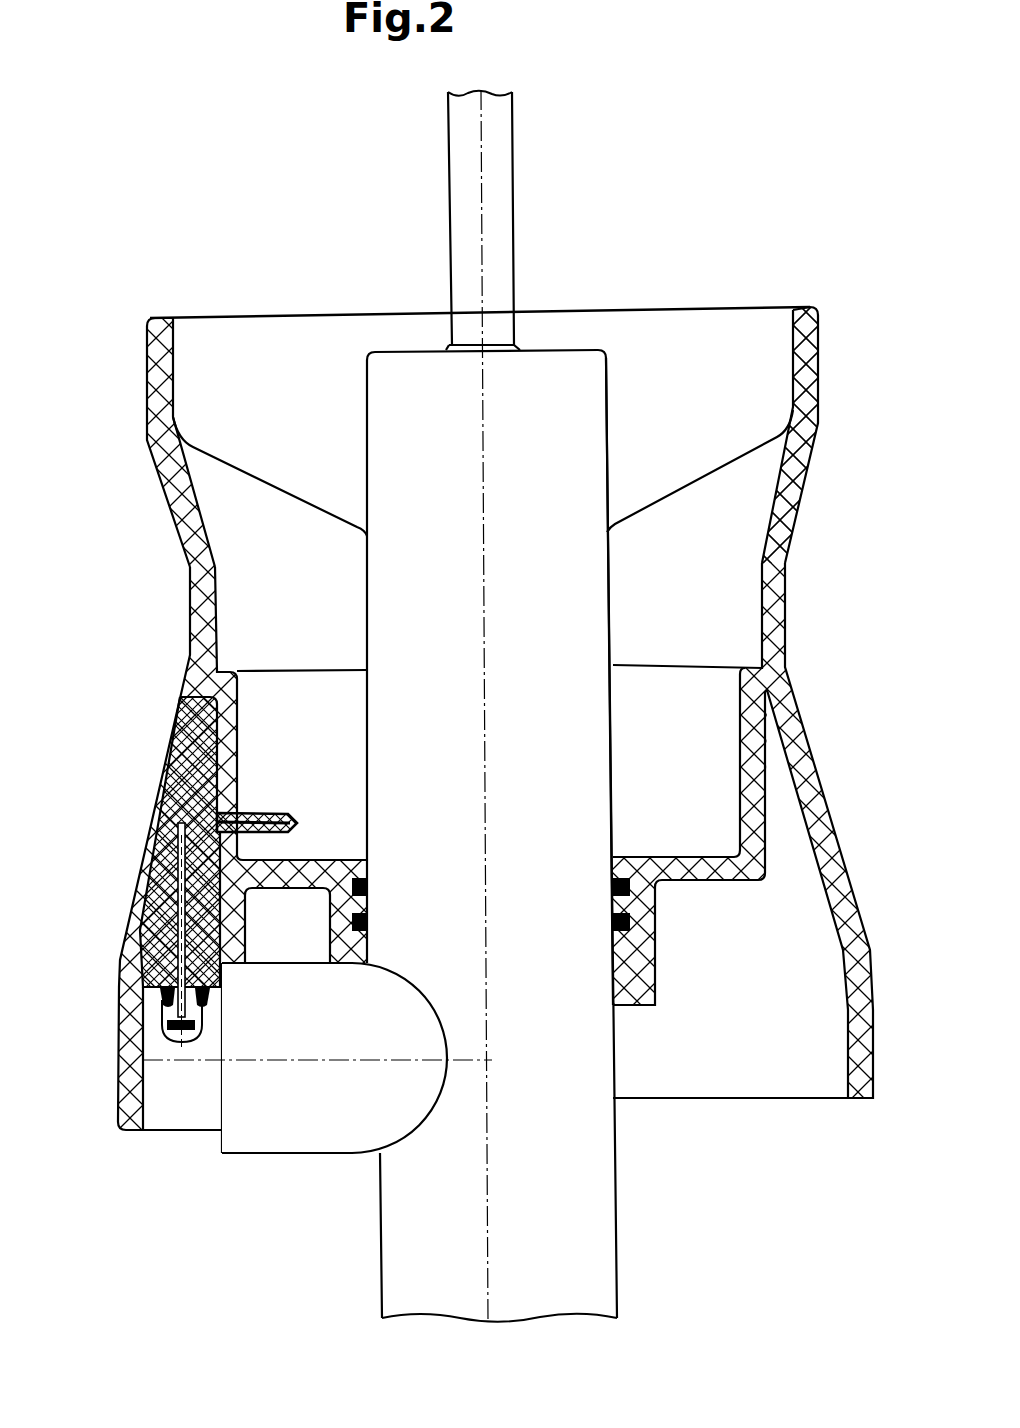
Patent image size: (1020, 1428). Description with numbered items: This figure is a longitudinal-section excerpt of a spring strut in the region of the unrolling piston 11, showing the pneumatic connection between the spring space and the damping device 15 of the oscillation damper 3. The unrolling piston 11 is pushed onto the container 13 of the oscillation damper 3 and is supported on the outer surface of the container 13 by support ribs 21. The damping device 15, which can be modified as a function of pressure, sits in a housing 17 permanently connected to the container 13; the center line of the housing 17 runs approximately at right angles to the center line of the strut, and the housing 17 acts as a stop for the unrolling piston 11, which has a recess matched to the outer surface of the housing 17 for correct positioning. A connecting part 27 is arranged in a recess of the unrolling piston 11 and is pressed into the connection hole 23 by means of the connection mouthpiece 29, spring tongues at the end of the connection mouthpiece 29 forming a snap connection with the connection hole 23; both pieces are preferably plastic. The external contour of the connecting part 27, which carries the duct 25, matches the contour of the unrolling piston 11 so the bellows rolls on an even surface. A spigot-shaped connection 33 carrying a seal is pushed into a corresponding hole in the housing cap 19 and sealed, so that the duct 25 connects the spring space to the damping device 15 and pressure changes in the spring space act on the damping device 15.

The oscillation damper 3 is at (617, 1170).
The unrolling piston 11 is at (806, 428).
The container 13 is at (585, 1242).
The damping device 15 is at (312, 1152).
The housing 17 is at (237, 1127).
The housing cap 19 is at (162, 1113).
The support ribs 21 is at (790, 563).
The connection hole 23 is at (158, 803).
The duct 25 is at (157, 830).
The connecting part 27 is at (145, 863).
The connection mouthpiece 29 is at (178, 727).
The connection 33 is at (160, 1000).